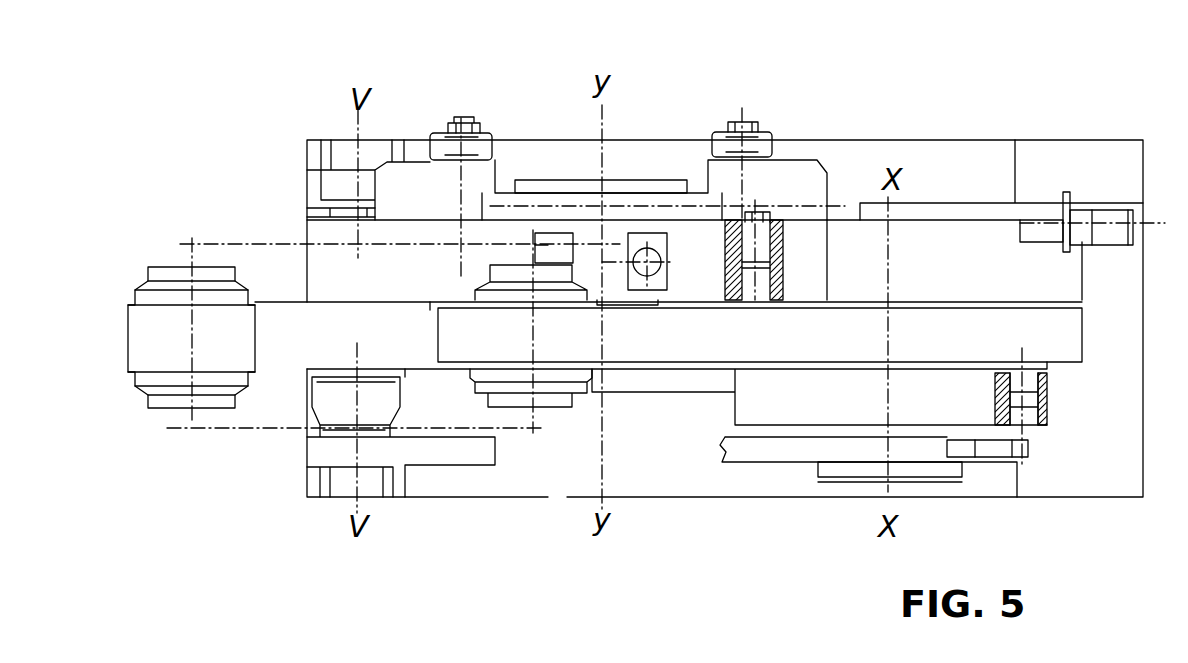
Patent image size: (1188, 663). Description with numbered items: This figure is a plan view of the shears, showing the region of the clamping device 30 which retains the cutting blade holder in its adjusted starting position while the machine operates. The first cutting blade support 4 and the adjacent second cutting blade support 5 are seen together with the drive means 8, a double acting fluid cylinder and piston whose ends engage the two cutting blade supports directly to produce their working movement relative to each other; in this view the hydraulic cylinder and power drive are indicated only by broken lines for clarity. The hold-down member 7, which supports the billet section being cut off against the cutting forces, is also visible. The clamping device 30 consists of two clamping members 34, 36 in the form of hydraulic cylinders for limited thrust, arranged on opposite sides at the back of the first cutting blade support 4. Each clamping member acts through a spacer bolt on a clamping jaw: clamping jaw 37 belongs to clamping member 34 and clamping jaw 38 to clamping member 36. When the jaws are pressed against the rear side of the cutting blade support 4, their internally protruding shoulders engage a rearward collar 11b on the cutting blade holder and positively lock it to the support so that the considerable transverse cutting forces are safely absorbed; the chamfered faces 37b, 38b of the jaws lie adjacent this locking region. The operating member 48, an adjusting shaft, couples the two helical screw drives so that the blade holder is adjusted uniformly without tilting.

The clamping device 30 is at (668, 112).
The drive means 8 is at (275, 243).
The first cutting blade support 4 is at (330, 235).
The clamping jaw 37 is at (432, 188).
The block chamfer 37b is at (387, 210).
The clamping member 34 is at (443, 143).
The clamping member 36 is at (757, 145).
The rearward collar 11b is at (722, 202).
The clamping jaw 38 is at (808, 183).
The block face 38b is at (820, 213).
The operating member 48 is at (1043, 210).
The second cutting blade support 5 is at (715, 337).
The hold-down member 7 is at (783, 448).